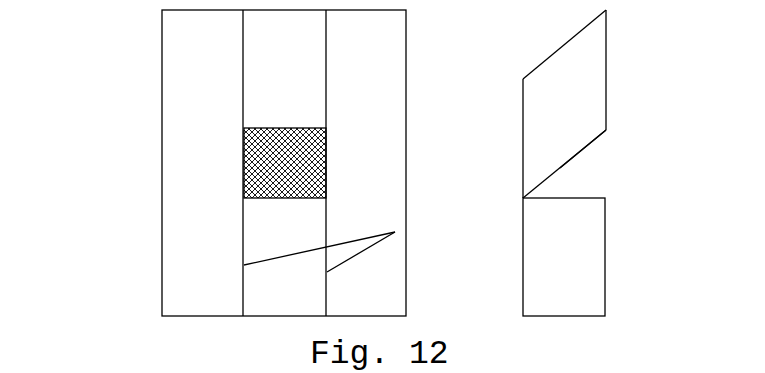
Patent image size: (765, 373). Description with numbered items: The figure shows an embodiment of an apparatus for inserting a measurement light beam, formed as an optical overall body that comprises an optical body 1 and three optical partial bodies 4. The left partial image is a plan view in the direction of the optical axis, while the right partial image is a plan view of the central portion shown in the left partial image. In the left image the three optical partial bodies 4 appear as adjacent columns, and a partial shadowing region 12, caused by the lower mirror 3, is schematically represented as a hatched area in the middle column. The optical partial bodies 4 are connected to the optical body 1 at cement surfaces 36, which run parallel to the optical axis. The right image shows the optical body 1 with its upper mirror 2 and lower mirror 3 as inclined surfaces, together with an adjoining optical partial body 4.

The optical partial body 4 is at (368, 163).
The partial shadowing region 12 is at (318, 163).
The cement surface 36 is at (395, 232).
The optical body 1 is at (592, 104).
The upper mirror 2 is at (592, 47).
The lower mirror 3 is at (611, 154).